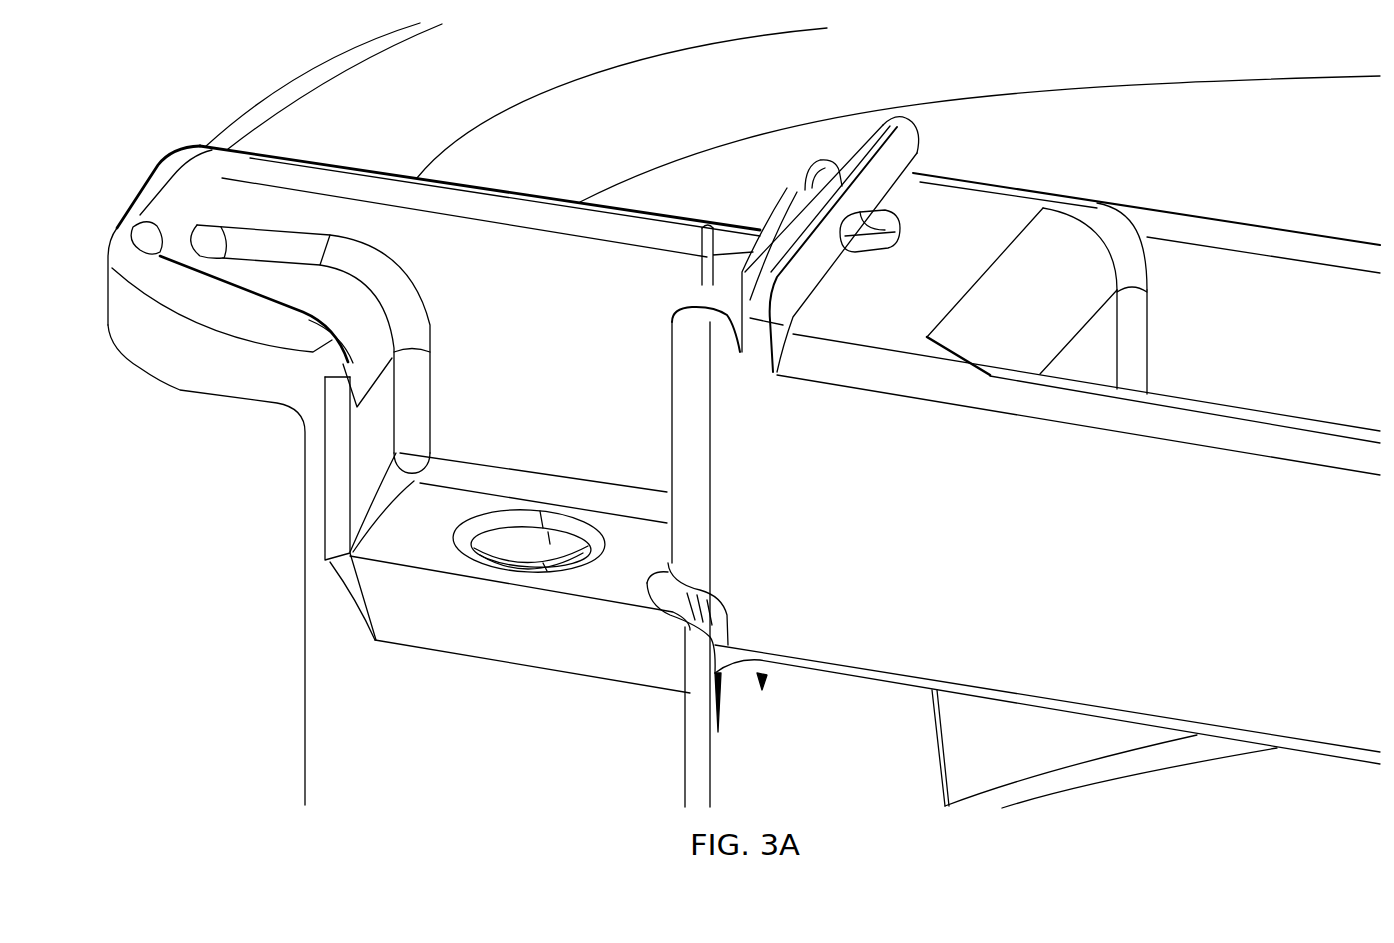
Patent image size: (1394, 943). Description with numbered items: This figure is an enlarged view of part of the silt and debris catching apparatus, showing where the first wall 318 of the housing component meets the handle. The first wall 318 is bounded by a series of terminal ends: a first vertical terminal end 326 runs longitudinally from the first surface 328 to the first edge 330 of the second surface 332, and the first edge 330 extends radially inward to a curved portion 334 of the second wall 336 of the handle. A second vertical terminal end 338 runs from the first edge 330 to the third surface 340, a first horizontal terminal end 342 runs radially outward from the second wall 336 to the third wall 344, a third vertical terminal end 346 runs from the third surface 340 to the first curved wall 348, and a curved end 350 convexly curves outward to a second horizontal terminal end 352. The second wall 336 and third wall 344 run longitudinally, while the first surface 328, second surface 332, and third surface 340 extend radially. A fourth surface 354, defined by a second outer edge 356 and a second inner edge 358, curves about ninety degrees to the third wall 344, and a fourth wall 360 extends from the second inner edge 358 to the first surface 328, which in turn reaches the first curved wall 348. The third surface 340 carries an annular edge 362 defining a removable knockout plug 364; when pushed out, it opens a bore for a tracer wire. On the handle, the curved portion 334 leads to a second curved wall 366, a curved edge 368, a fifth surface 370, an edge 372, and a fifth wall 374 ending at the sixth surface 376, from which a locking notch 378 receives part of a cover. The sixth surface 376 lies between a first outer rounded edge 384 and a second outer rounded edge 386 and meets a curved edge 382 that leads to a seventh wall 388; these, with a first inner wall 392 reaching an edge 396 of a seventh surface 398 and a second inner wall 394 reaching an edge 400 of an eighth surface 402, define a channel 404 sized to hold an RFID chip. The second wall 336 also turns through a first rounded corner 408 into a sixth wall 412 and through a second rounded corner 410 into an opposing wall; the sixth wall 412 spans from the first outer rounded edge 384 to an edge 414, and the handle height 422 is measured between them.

The first wall 318 is at (572, 347).
The first vertical terminal end 326 is at (228, 204).
The first surface 328 is at (263, 280).
The first edge 330 is at (303, 186).
The second surface 332 is at (375, 188).
The curved portion 334 is at (702, 228).
The second wall 336 is at (669, 320).
The second vertical terminal end 338 is at (667, 353).
The third surface 340 is at (612, 583).
The first horizontal terminal end 342 is at (549, 472).
The third wall 344 is at (394, 455).
The third vertical terminal end 346 is at (440, 413).
The first curved wall 348 is at (391, 357).
The curved end 350 is at (425, 312).
The second horizontal terminal end 352 is at (322, 240).
The fourth surface 354 is at (171, 313).
The second outer edge 356 is at (109, 316).
The second inner edge 358 is at (183, 152).
The fourth wall 360 is at (162, 207).
The annular edge 362 is at (458, 547).
The knockout plug 364 is at (583, 529).
The second curved wall 366 is at (752, 258).
The curved edge 368 is at (803, 198).
The fifth surface 370 is at (829, 182).
The edge 372 is at (868, 160).
The fifth wall 374 is at (893, 167).
The sixth surface 376 is at (919, 305).
The locking notch 378 is at (884, 229).
The curved edge 382 is at (1037, 323).
The first outer rounded edge 384 is at (899, 368).
The second outer rounded edge 386 is at (1023, 188).
The seventh wall 388 is at (1093, 355).
The first inner wall 392 is at (1269, 398).
The second inner wall 394 is at (1297, 318).
The edge 396 is at (1313, 421).
The seventh surface 398 is at (1130, 412).
The edge 400 is at (1243, 248).
The eighth surface 402 is at (1313, 244).
The channel 404 is at (1175, 267).
The first rounded corner 408 is at (684, 447).
The second rounded corner 410 is at (849, 177).
The sixth wall 412 is at (974, 560).
The edge 414 is at (862, 676).
The height 422 is at (1280, 484).